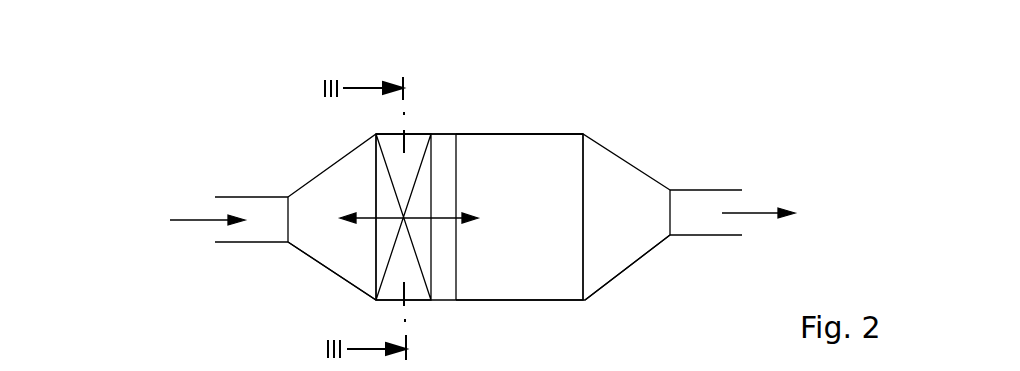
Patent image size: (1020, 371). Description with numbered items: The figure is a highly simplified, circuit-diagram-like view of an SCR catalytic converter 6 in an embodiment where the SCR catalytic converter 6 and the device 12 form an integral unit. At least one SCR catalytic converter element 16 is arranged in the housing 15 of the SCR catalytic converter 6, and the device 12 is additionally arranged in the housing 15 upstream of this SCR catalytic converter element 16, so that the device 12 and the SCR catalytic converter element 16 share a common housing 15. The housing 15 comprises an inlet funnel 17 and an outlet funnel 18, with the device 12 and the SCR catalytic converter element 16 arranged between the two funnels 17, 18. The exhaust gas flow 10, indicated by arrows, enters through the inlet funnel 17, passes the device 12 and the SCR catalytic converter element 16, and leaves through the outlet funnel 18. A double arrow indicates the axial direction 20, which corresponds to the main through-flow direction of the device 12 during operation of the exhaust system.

The SCR catalytic converter 6 is at (626, 162).
The exhaust gas flow 10 is at (200, 218).
The device 12 is at (425, 258).
The housing 15 is at (482, 132).
The SCR catalytic converter element 16 is at (535, 235).
The inlet funnel 17 is at (330, 272).
The outlet funnel 18 is at (630, 270).
The axial direction 20 is at (360, 210).